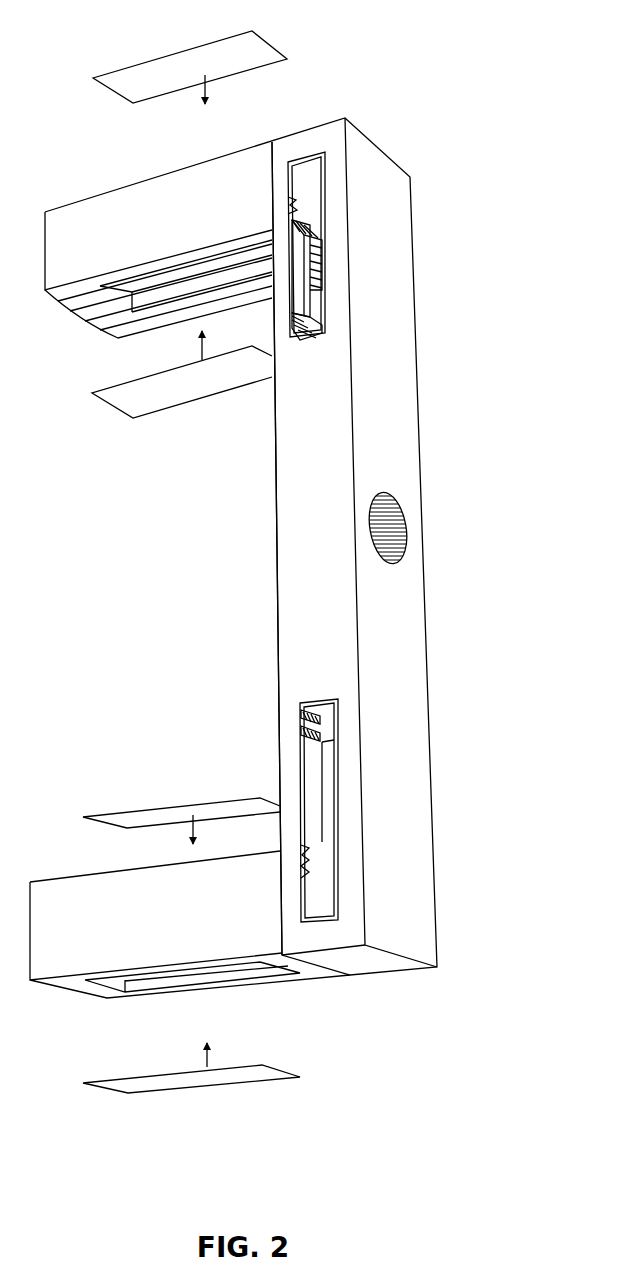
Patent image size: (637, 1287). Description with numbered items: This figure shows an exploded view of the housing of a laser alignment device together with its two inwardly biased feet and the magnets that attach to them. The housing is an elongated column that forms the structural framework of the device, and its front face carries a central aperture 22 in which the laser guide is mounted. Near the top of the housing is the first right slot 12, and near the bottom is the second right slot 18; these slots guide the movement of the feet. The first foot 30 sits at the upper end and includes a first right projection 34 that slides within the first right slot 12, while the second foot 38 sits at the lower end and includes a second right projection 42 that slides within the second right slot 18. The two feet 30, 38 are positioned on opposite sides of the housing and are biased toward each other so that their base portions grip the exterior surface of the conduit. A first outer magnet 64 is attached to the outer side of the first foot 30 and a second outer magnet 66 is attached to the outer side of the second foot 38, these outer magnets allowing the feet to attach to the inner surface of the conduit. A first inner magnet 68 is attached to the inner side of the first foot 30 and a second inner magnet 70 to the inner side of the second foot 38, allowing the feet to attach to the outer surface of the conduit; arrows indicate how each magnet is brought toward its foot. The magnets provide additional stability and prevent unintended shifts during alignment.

The first right slot 12 is at (318, 302).
The second right slot 18 is at (315, 800).
The central aperture 22 is at (407, 525).
The first foot 30 is at (147, 158).
The first right projection 34 is at (308, 180).
The second foot 38 is at (240, 1003).
The second right projection 42 is at (323, 887).
The first outer magnet 64 is at (167, 55).
The second outer magnet 66 is at (188, 1083).
The first inner magnet 68 is at (173, 398).
The second inner magnet 70 is at (157, 807).